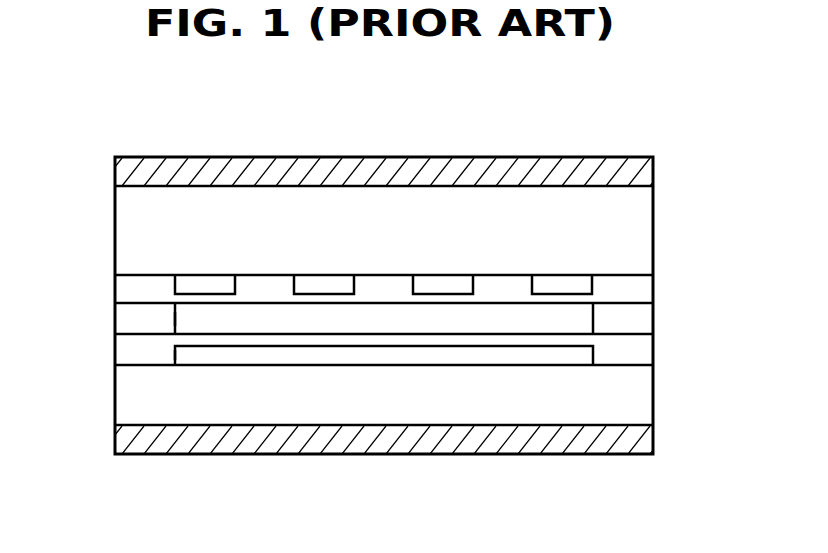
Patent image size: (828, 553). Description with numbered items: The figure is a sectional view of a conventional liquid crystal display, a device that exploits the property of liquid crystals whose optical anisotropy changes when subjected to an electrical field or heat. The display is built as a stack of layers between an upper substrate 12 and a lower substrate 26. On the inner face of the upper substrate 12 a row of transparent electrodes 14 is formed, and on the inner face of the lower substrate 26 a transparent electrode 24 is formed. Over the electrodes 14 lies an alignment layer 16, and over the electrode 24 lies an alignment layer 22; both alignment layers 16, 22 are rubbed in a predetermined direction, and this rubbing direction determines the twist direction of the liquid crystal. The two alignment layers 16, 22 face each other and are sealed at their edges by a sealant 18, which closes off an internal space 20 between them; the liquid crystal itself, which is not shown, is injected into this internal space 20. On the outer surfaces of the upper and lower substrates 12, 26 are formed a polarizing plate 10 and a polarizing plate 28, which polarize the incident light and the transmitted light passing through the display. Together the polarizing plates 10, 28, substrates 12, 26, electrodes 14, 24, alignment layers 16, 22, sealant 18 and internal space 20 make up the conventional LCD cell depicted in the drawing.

The polarizing plate 10 is at (640, 176).
The upper substrate 12 is at (640, 241).
The electrode 14 is at (180, 277).
The alignment layer 16 is at (640, 284).
The sealant 18 is at (640, 319).
The internal space 20 is at (180, 316).
The alignment layer 22 is at (640, 349).
The electrode 24 is at (180, 351).
The lower substrate 26 is at (640, 403).
The polarizing plate 28 is at (640, 438).